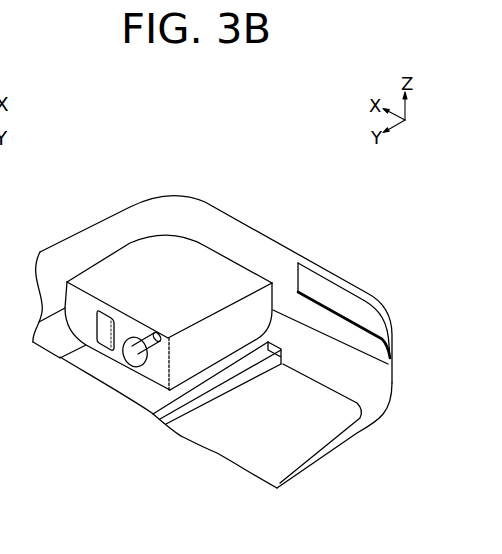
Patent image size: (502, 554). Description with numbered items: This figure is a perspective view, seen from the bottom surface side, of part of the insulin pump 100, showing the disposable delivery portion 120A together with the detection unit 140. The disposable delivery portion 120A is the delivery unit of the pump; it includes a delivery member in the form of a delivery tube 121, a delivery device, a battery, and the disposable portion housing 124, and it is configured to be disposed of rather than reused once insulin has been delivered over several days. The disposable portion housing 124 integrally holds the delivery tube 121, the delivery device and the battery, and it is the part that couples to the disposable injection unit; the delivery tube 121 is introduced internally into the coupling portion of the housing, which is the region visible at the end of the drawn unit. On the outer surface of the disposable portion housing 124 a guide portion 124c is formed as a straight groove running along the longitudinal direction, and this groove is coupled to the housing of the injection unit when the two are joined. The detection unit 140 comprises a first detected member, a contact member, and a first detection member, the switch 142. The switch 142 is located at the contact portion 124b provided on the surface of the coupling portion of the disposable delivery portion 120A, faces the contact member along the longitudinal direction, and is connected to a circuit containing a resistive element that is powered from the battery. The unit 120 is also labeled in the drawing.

The insulin pump 100 is at (128, 142).
The disposable delivery portion 120A is at (260, 211).
The housing 120 is at (148, 430).
The delivery tube 121 is at (143, 347).
The disposable portion housing 124 is at (342, 415).
The contact portion 124b is at (160, 360).
The guide portion 124c is at (240, 380).
The detection unit 140 is at (68, 375).
The switch 142 is at (108, 340).